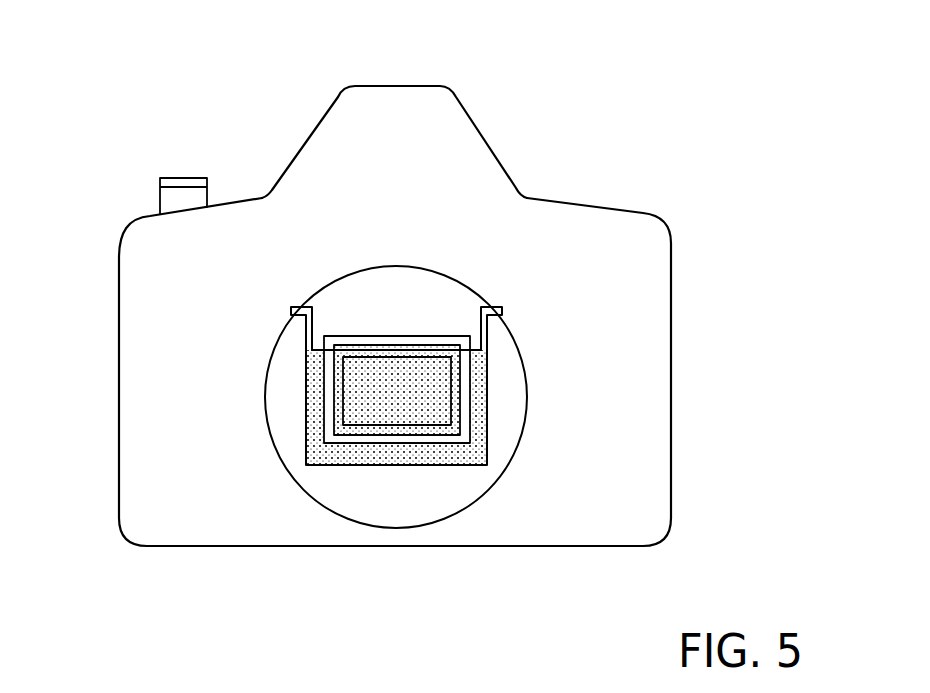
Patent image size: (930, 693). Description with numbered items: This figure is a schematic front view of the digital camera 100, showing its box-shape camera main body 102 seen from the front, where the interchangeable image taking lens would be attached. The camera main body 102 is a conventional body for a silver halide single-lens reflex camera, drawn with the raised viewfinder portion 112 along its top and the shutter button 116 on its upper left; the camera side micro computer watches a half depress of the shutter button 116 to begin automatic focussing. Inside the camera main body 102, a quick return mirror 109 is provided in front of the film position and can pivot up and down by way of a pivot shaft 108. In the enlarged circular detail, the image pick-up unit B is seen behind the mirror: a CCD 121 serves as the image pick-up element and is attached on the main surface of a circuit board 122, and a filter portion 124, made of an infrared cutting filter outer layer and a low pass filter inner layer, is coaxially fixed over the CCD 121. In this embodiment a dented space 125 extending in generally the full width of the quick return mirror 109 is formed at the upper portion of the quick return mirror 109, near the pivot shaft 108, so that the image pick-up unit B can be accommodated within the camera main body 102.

The digital camera 100 is at (432, 292).
The camera main body 102 is at (672, 277).
The viewfinder hump portion 112 is at (465, 127).
The shutter button 116 is at (168, 202).
The image pick-up unit B is at (425, 335).
The pivot shaft 108 is at (503, 311).
The quick return mirror 109 is at (478, 458).
The dented space 125 is at (467, 316).
The circuit board 122 is at (325, 417).
The filter portion 124 is at (352, 440).
The CCD 121 is at (393, 428).